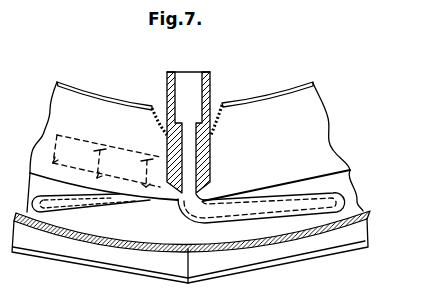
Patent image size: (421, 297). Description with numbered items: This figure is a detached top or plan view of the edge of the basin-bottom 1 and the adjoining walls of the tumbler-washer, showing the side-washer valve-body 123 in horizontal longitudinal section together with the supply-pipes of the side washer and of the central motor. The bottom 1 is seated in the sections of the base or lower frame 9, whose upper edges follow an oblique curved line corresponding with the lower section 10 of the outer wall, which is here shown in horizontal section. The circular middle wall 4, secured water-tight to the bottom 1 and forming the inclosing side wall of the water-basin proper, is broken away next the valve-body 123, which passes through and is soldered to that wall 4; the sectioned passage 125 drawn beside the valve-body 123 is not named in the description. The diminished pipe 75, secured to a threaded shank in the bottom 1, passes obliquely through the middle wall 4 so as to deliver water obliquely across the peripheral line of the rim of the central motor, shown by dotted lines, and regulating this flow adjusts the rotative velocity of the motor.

The middle wall 4 is at (190, 141).
The valve-body 123 is at (210, 78).
The channel 125 is at (261, 208).
The diminished pipe 75 is at (91, 203).
The bottom 1 is at (195, 201).
The lower section of the outer wall 10 is at (370, 212).
The base or lower frame sections 9 is at (190, 251).